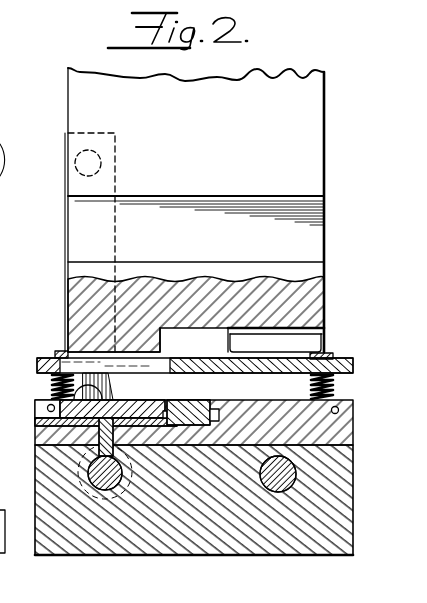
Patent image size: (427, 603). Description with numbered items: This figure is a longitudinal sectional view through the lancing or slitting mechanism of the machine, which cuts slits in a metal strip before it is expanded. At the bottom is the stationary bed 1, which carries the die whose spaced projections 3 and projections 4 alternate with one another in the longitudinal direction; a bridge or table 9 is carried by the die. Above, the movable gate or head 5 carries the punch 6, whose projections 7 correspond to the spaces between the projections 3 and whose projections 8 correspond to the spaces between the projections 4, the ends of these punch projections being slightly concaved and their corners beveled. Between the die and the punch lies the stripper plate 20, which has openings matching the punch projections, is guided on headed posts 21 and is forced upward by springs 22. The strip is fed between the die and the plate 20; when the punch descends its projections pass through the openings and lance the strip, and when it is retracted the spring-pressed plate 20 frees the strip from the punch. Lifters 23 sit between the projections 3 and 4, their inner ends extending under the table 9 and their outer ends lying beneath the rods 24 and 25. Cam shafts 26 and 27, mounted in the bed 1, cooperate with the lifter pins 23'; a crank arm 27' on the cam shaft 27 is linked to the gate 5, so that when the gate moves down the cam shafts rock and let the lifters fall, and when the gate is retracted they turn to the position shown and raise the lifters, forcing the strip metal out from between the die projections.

The stationary bed 1 is at (218, 546).
The die projections 3 is at (40, 408).
The die projections 4 is at (342, 428).
The movable gate or head 5 is at (318, 106).
The punch 6 is at (313, 298).
The punch projections 7 is at (85, 341).
The punch projections 8 is at (320, 331).
The bridge or table 9 is at (204, 400).
The stripper plate 20 is at (245, 364).
The headed posts 21 is at (55, 355).
The springs 22 is at (52, 384).
The lifters 23 is at (116, 395).
The lifter pins 23' is at (58, 441).
The rod 24 is at (60, 422).
The rod 25 is at (338, 408).
The cam shaft 26 is at (107, 490).
The cam shaft 27 is at (181, 520).
The crank arm 27' is at (16, 309).